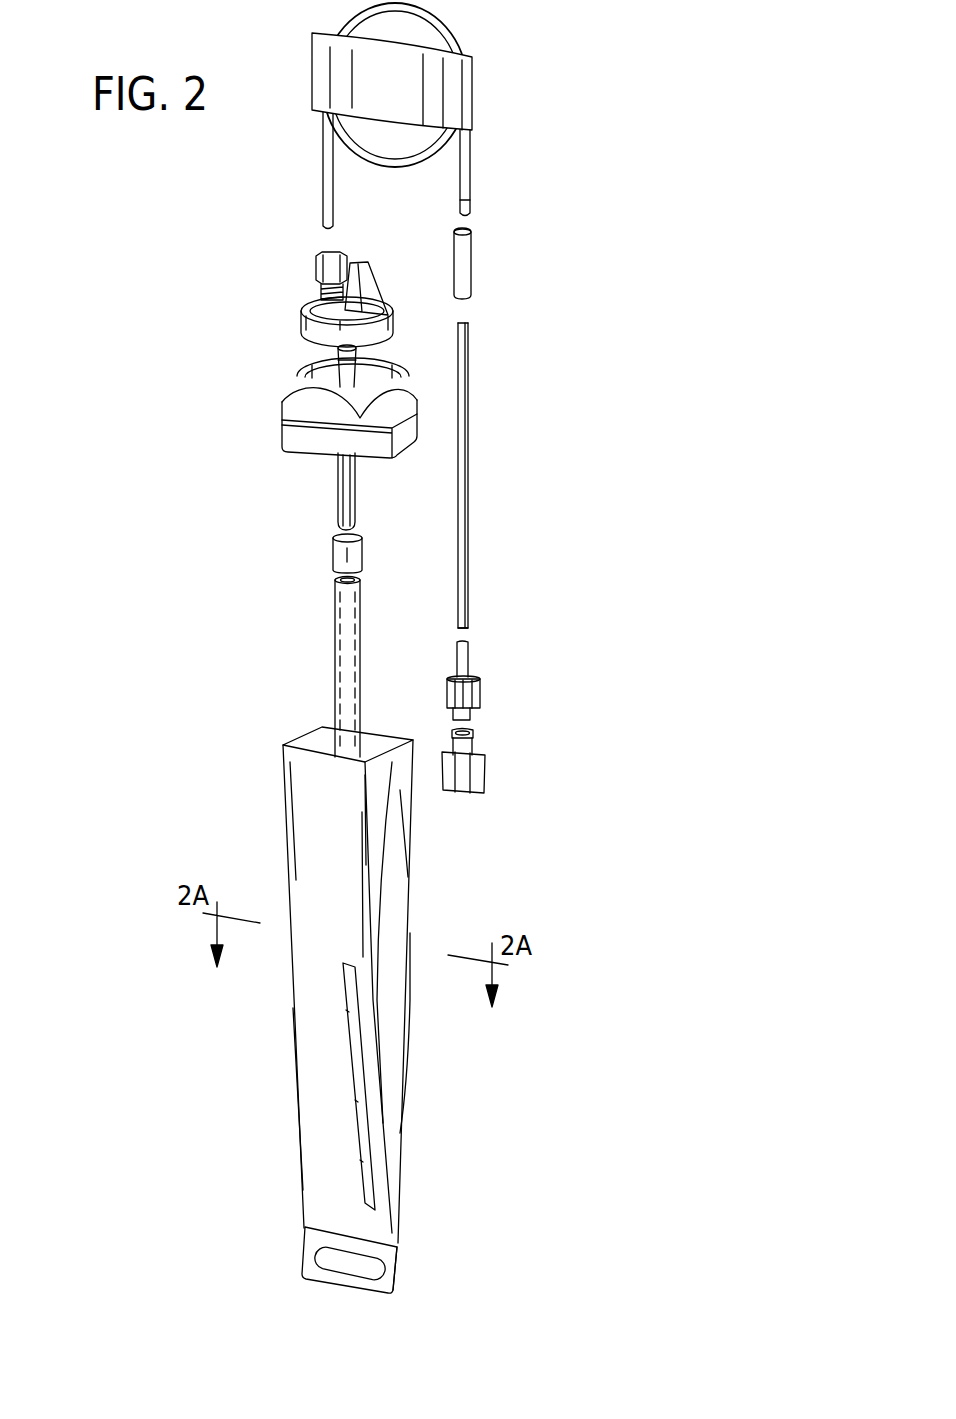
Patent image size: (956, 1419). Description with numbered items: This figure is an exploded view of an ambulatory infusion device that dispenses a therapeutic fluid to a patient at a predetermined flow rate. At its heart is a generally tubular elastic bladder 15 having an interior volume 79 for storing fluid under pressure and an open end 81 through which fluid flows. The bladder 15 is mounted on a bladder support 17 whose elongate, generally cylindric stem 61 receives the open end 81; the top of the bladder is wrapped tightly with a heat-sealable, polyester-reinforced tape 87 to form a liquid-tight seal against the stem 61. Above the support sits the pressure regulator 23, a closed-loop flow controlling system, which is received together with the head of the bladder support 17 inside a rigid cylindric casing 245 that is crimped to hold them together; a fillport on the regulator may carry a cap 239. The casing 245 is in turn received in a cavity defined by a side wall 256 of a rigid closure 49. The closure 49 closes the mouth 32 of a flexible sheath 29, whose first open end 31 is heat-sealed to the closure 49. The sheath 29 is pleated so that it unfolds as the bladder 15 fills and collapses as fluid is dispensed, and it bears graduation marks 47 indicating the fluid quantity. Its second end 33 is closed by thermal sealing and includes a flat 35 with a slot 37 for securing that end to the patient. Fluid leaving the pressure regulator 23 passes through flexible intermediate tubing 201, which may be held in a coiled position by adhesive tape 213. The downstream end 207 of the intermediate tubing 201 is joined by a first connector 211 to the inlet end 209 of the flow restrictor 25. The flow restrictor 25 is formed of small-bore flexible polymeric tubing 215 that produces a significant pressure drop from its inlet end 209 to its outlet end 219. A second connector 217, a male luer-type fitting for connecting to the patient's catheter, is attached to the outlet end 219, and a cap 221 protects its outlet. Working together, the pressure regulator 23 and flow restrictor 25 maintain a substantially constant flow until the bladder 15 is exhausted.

The bladder 15 is at (345, 655).
The bladder support 17 is at (336, 357).
The pressure regulator 23 is at (290, 282).
The flow restrictor 25 is at (520, 473).
The flexible sheath 29 is at (365, 1017).
The first open end 31 is at (297, 740).
The mouth 32 is at (300, 753).
The second end 33 is at (363, 1273).
The flat 35 is at (400, 1260).
The slot 37 is at (322, 1250).
The graduation marks 47 is at (372, 1135).
The rigid closure 49 is at (283, 406).
The stem 61 is at (340, 500).
The interior volume 79 is at (341, 658).
The open end 81 is at (358, 580).
The tape 87 is at (333, 558).
The intermediate tubing 201 is at (472, 168).
The downstream end 207 is at (468, 216).
The inlet end 209 is at (470, 324).
The first connector 211 is at (472, 272).
The adhesive tape 213 is at (472, 93).
The flexible tubing 215 is at (470, 400).
The second connector 217 is at (468, 665).
The outlet end 219 is at (472, 630).
The cap 221 is at (482, 762).
The cap 239 is at (322, 258).
The cylindric casing 245 is at (302, 320).
The side wall 256 is at (372, 372).